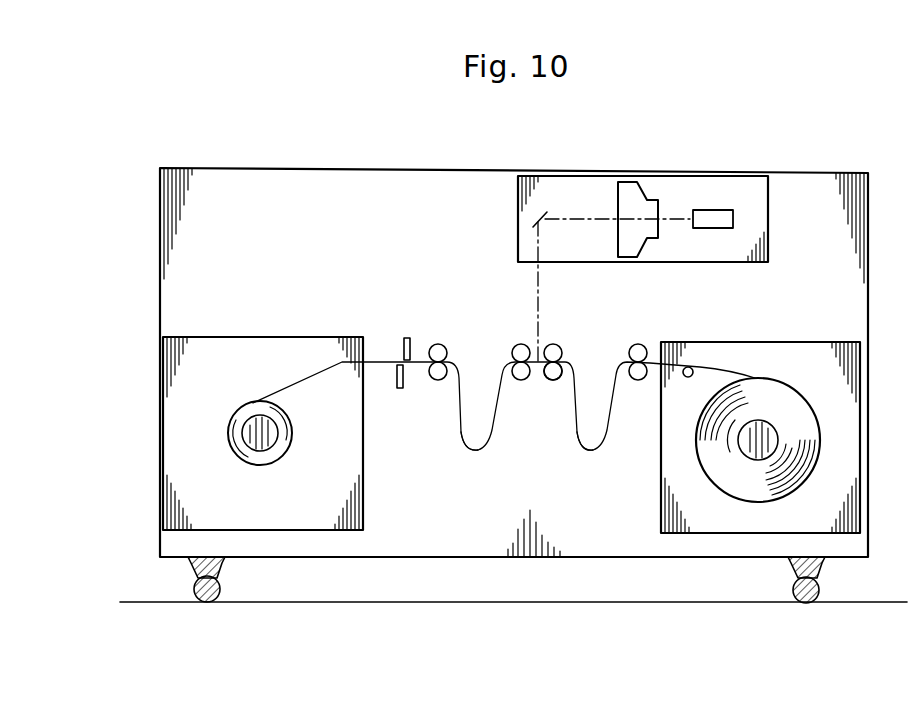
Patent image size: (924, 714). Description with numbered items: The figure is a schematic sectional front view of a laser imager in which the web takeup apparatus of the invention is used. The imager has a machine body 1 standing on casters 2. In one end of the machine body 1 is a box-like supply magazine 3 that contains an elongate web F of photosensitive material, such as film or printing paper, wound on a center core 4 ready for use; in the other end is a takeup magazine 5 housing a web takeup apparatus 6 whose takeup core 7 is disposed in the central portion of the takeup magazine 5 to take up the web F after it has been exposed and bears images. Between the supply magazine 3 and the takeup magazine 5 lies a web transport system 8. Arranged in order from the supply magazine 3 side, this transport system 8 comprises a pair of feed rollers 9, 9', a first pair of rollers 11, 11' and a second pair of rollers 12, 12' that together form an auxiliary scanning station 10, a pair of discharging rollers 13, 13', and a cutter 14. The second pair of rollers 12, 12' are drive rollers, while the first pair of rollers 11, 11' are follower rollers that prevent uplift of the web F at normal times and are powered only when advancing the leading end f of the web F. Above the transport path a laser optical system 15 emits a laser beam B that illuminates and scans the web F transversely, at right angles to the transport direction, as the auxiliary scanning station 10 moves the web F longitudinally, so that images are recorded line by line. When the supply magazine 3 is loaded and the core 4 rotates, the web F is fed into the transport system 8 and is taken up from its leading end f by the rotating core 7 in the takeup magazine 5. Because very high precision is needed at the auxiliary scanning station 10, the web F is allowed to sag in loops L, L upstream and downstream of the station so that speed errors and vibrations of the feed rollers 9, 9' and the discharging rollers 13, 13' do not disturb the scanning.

The machine body 1 is at (866, 172).
The casters 2 is at (222, 583).
The supply magazine 3 is at (838, 483).
The center core 4 is at (773, 430).
The takeup magazine 5 is at (172, 499).
The web takeup apparatus 6 is at (244, 433).
The takeup core 7 is at (243, 430).
The web transport system 8 is at (776, 409).
The feed roller 9 is at (635, 333).
The feed roller 9' is at (639, 394).
The auxiliary scanning station 10 is at (559, 339).
The first roller 11 is at (577, 360).
The first roller 11' is at (561, 394).
The second roller 12 is at (506, 333).
The second roller 12' is at (520, 394).
The discharging roller 13 is at (440, 333).
The discharging roller 13' is at (429, 394).
The cutter 14 is at (402, 355).
The laser optical system 15 is at (707, 188).
The laser beam B is at (537, 284).
The web F is at (461, 441).
The loop L is at (478, 453).
The leading end f is at (268, 398).